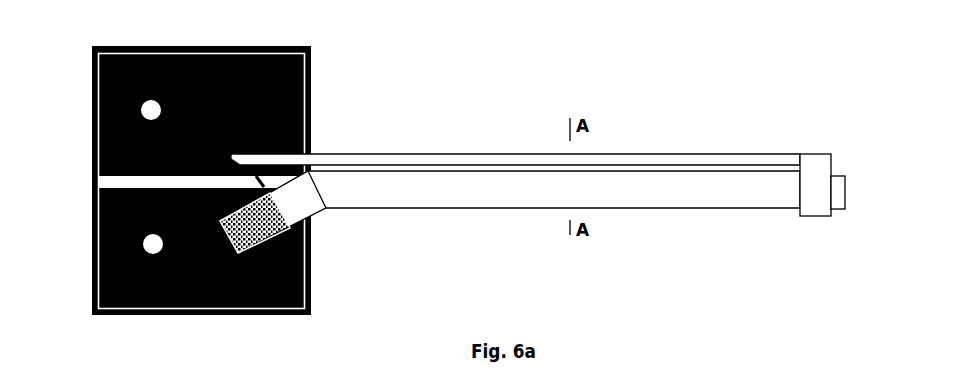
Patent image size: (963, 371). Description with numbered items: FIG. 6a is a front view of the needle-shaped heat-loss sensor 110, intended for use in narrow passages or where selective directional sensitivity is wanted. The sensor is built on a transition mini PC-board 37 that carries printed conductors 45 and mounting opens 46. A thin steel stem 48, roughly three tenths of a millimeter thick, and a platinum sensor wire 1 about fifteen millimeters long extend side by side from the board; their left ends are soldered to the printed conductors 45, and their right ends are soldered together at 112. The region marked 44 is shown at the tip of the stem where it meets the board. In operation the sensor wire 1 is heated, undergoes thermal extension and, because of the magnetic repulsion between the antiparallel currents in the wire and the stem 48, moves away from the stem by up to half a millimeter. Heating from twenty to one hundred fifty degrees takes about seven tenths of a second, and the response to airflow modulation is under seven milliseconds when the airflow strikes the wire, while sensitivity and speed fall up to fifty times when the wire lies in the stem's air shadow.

The transition mini PC-board 37 is at (278, 68).
The printed conductors 45 is at (88, 177).
The mounting opens 46 is at (135, 108).
The needle-shaped heat-loss sensor 110 is at (570, 175).
The steel stem 48 is at (472, 183).
The cutting tip 44 is at (793, 205).
The platinum sensor wire 1 is at (480, 145).
The soldered joint of stem and wire right ends 112 is at (829, 210).